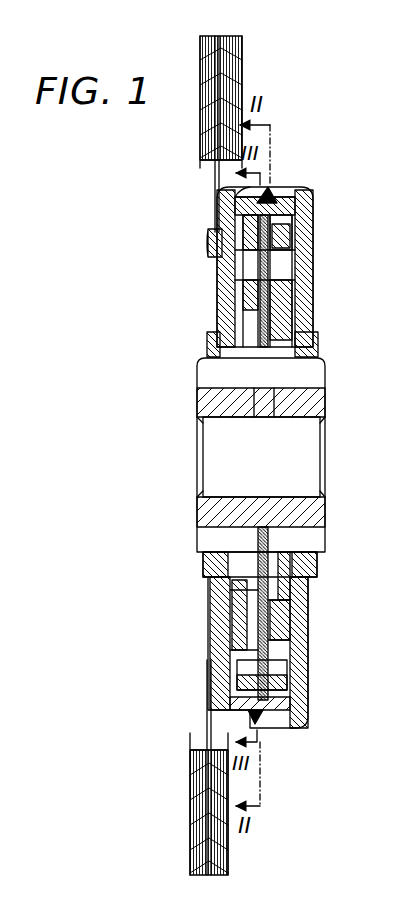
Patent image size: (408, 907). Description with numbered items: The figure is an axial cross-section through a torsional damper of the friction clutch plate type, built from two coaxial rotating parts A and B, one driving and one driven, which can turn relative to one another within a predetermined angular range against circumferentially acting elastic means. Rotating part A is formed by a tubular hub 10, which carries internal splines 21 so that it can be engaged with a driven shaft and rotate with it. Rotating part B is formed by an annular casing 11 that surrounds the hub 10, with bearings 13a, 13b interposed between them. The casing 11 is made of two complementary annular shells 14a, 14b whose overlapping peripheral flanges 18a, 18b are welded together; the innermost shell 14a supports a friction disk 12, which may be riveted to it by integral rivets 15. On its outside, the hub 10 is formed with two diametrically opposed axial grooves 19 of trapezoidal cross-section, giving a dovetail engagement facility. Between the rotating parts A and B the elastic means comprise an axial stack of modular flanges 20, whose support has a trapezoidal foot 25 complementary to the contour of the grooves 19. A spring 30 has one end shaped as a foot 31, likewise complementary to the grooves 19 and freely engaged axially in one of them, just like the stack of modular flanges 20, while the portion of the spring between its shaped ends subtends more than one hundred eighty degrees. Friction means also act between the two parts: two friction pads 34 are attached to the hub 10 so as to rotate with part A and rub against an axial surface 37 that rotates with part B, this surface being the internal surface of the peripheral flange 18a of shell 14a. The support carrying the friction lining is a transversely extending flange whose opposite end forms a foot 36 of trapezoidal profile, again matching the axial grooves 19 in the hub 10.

The tubular hub 10 is at (271, 518).
The rotating part A is at (272, 518).
The annular casing 11 is at (265, 246).
The rotating part B is at (268, 246).
The friction disk 12 is at (246, 86).
The bearing 13a is at (207, 340).
The bearing 13b is at (316, 340).
The annular shell 14a is at (226, 269).
The annular shell 14b is at (303, 262).
The integral rivets 15 is at (206, 236).
The peripheral flange 18a is at (284, 205).
The peripheral flange 18b is at (300, 192).
The axial grooves 19 is at (197, 385).
The modular flanges 20 is at (264, 640).
The internal splines 21 is at (212, 490).
The foot 25 is at (345, 468).
The spring 30 is at (246, 612).
The foot 31 is at (264, 505).
The friction pads 34 is at (222, 234).
The foot 36 is at (298, 505).
The axial surface 37 is at (258, 205).